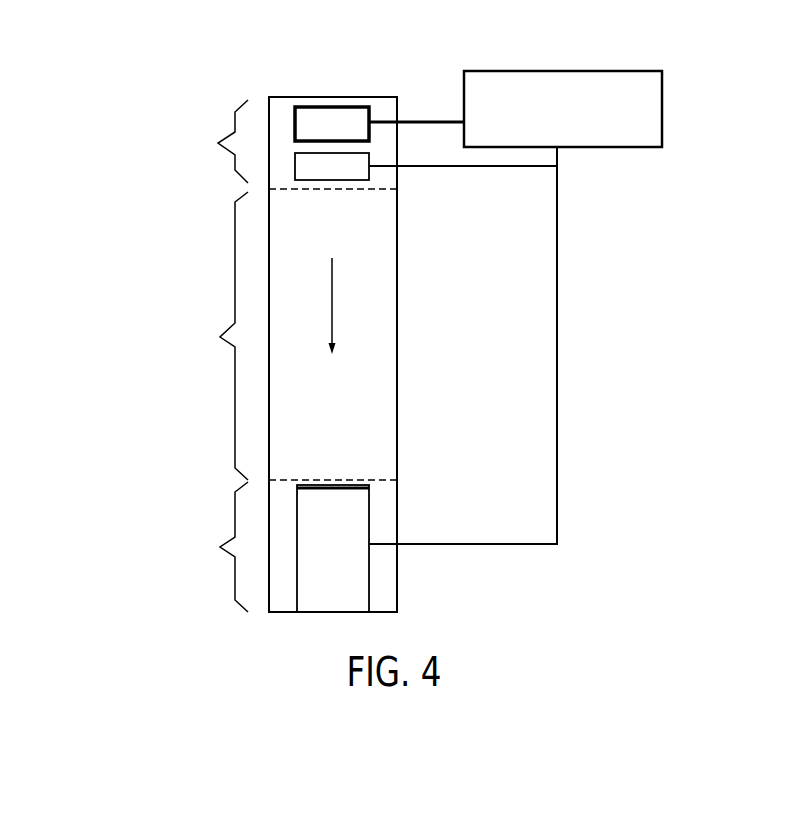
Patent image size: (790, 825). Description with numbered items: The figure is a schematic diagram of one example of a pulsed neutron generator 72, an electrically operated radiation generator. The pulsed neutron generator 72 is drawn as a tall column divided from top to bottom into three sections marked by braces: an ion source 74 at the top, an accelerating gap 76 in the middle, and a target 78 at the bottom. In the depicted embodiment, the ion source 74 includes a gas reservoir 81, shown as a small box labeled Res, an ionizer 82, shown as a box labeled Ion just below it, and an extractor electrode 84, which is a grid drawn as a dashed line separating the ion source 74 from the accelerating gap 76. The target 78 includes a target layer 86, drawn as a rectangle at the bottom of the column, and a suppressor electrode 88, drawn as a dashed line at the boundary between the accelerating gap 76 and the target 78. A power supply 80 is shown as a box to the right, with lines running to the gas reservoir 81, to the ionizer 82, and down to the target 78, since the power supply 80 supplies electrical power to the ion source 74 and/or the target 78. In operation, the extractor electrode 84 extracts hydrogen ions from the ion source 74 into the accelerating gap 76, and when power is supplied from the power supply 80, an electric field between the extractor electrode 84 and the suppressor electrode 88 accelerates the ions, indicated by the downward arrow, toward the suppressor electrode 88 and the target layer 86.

The pulsed neutron generator 72 is at (135, 60).
The ion source 74 is at (213, 141).
The accelerating gap 76 is at (263, 336).
The target 78 is at (218, 547).
The power supply 80 is at (663, 104).
The gas reservoir 81 is at (295, 122).
The ionizer 82 is at (369, 168).
The extractor electrode 84 is at (375, 191).
The target layer 86 is at (360, 488).
The suppressor electrode 88 is at (362, 475).